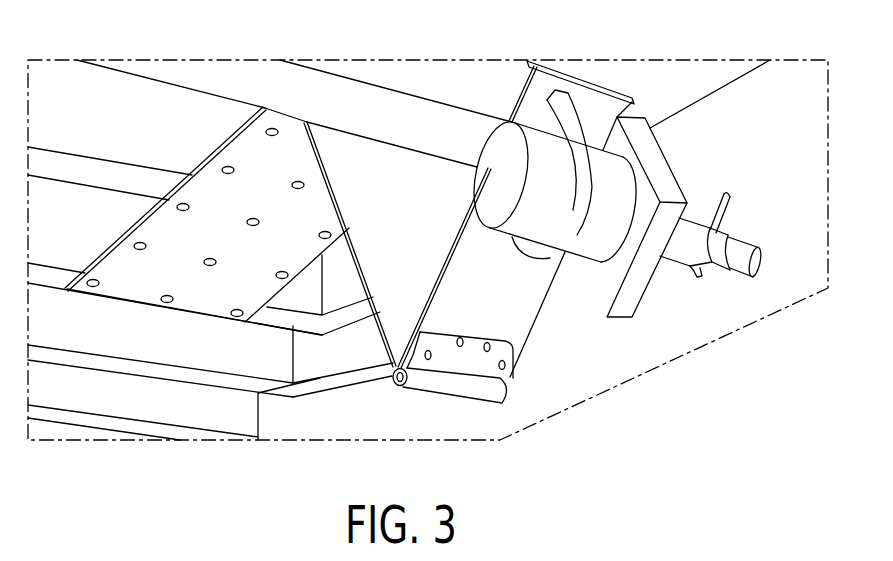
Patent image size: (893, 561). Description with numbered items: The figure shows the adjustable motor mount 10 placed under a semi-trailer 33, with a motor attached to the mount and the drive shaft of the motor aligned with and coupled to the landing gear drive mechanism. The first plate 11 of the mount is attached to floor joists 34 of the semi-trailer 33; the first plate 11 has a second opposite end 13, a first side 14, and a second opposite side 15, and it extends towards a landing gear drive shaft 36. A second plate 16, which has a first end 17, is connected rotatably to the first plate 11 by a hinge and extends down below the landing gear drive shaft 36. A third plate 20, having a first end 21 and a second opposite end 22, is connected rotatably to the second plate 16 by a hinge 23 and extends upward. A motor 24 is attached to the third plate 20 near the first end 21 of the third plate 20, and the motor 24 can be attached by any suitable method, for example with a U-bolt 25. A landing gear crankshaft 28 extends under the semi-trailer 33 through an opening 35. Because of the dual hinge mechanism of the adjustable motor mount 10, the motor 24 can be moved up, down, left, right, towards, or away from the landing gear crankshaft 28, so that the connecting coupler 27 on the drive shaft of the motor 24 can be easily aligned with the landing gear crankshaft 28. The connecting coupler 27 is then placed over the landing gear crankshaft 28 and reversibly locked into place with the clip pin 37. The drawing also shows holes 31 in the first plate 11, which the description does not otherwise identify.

The adjustable motor mount 10 is at (195, 395).
The first plate 11 is at (268, 200).
The second opposite end 13 is at (177, 310).
The first side 14 is at (312, 258).
The second opposite side 15 is at (177, 190).
The second plate 16 is at (419, 218).
The first end 17 is at (387, 327).
The third plate 20 is at (498, 295).
The first end 21 is at (585, 82).
The second opposite end 22 is at (518, 357).
The hinge 23 is at (452, 367).
The motor 24 is at (620, 183).
The U-bolt 25 is at (577, 197).
The connecting coupler 27 is at (678, 250).
The landing gear crankshaft 28 is at (737, 242).
The holes 31 is at (173, 300).
The semi-trailer 33 is at (803, 118).
The floor joists 34 is at (68, 163).
The opening 35 is at (757, 257).
The landing gear drive shaft 36 is at (402, 115).
The clip pin 37 is at (727, 195).